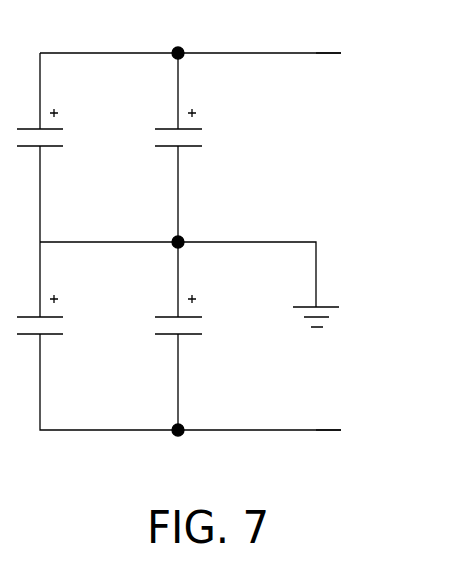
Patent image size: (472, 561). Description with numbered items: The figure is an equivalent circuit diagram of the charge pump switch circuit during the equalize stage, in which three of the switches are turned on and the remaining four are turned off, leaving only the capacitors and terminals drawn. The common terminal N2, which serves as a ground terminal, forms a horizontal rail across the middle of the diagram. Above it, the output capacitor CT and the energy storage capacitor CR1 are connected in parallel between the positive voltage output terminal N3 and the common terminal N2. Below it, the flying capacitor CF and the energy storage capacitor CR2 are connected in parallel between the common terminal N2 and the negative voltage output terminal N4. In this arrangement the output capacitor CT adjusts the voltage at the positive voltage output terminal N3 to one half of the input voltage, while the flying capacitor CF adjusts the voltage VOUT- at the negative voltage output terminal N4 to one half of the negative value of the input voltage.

The positive voltage output terminal N3 is at (173, 36).
The common terminal N2 is at (198, 225).
The negative voltage output terminal N4 is at (178, 448).
The output capacitor CT is at (62, 131).
The energy storage capacitor CR1 is at (210, 131).
The flying capacitor CF is at (61, 318).
The energy storage capacitor CR2 is at (210, 318).
The negative output voltage VOUT- is at (374, 428).